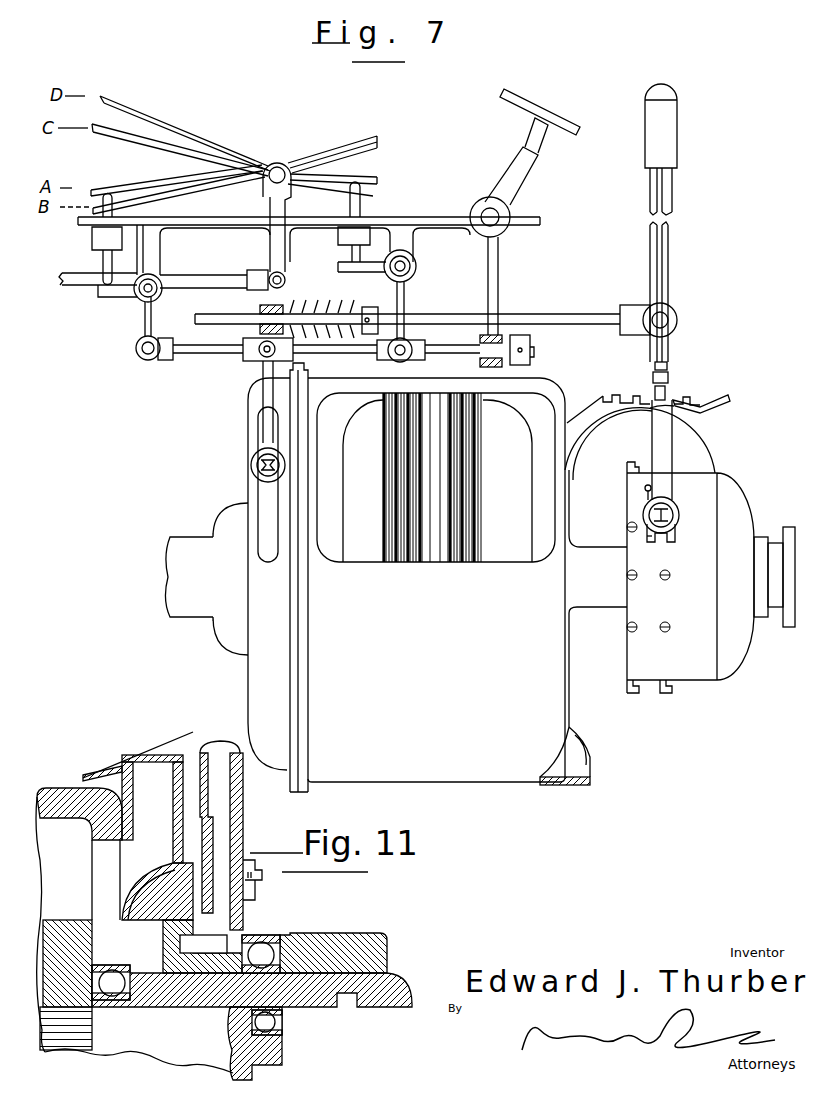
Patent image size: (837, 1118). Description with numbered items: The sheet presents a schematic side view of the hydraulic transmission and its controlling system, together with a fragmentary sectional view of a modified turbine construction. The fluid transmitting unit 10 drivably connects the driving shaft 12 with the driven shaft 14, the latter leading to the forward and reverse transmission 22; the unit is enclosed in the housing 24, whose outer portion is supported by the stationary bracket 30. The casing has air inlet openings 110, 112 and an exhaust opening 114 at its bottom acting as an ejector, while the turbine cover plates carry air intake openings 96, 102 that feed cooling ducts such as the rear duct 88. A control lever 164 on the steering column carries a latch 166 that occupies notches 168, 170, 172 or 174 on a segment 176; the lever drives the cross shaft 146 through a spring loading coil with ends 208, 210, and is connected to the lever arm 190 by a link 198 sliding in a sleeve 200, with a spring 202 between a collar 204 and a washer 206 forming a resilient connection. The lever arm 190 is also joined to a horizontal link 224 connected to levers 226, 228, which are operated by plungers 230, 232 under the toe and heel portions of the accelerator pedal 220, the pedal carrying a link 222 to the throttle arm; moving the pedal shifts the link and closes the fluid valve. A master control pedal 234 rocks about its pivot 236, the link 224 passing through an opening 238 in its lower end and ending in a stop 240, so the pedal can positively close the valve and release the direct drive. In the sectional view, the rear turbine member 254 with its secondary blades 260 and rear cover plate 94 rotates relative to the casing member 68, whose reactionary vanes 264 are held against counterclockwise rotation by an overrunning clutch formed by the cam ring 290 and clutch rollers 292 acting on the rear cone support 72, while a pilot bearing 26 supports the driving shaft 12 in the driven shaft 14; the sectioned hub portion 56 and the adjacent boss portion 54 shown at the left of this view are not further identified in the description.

In FIG. 7, the accelerator pedal 220 is at (257, 160).
In FIG. 7, the plunger 230 is at (107, 262).
In FIG. 7, the link 222 is at (77, 287).
In FIG. 7, the lever 226 is at (146, 333).
In FIG. 7, the link 224 is at (190, 354).
In FIG. 7, the sleeve 200 is at (258, 307).
In FIG. 7, the lever arm 190 is at (263, 379).
In FIG. 7, the plunger 232 is at (337, 253).
In FIG. 7, the lever 228 is at (412, 288).
In FIG. 7, the spring 202 is at (356, 309).
In FIG. 7, the collar 204 is at (380, 312).
In FIG. 7, the washer 206 is at (306, 338).
In FIG. 7, the master control pedal 234 is at (520, 104).
In FIG. 7, the pivot 236 is at (485, 216).
In FIG. 7, the opening 238 is at (477, 344).
In FIG. 7, the stop 240 is at (531, 351).
In FIG. 7, the control lever 164 is at (672, 129).
In FIG. 7, the link 198 is at (590, 316).
In FIG. 7, the latch 166 is at (668, 379).
In FIG. 7, the notch 172 is at (652, 392).
In FIG. 7, the notch 174 is at (607, 394).
In FIG. 7, the notch 168 is at (678, 401).
In FIG. 7, the segment 176 is at (704, 409).
In FIG. 7, the notch 170 is at (665, 409).
In FIG. 7, the forward and reverse transmission 22 is at (750, 468).
In FIG. 7, the spring loading coil end 208 is at (645, 490).
In FIG. 7, the cross shaft 146 is at (663, 514).
In FIG. 7, the spring loading coil end 210 is at (650, 541).
In FIG. 7, the stationary bracket 30 is at (600, 598).
In FIG. 11, the stationary bracket 30 is at (372, 938).
In FIG. 7, the air inlet opening 110 is at (268, 501).
In FIG. 7, the air intake opening 96 is at (338, 488).
In FIG. 7, the air intake opening 102 is at (540, 494).
In FIG. 7, the air inlet opening 112 is at (337, 556).
In FIG. 7, the fluid transmitting unit 10 is at (375, 558).
In FIG. 7, the housing 24 is at (262, 709).
In FIG. 11, the housing 24 is at (244, 800).
In FIG. 7, the exhaust opening 114 is at (590, 764).
In FIG. 11, the reactionary vanes 264 is at (158, 756).
In FIG. 11, the rear annular air cooling duct 88 is at (108, 770).
In FIG. 11, the rear turbine member 254 is at (70, 790).
In FIG. 11, the rear cover plate 94 is at (222, 748).
In FIG. 11, the casing member 68 is at (175, 804).
In FIG. 11, the secondary blades 260 is at (100, 855).
In FIG. 11, the rear cone support 72 is at (137, 914).
In FIG. 11, the hub 56 is at (42, 941).
In FIG. 11, the clutch rollers 292 is at (245, 931).
In FIG. 11, the overrunning clutch cam ring 290 is at (215, 976).
In FIG. 11, the pilot bearing 26 is at (272, 1024).
In FIG. 11, the driven shaft 14 is at (327, 1008).
In FIG. 11, the boss 54 is at (62, 1048).
In FIG. 11, the driving shaft 12 is at (145, 1053).